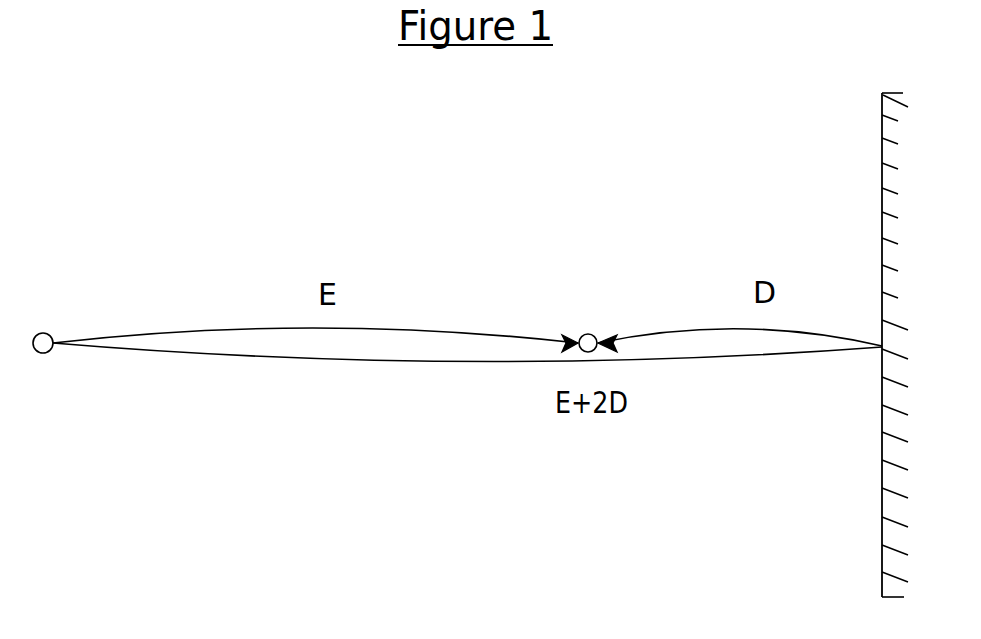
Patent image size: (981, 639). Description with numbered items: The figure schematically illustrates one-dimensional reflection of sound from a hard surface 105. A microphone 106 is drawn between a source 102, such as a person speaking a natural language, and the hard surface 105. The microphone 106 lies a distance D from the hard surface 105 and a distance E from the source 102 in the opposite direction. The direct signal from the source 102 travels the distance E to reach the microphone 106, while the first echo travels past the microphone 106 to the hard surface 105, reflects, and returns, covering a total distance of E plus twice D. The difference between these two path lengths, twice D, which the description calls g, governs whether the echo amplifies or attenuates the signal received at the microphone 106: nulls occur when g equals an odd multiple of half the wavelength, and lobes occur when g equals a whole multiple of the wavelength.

The source 102 is at (46, 333).
The microphone 106 is at (590, 335).
The hard surface 105 is at (881, 112).